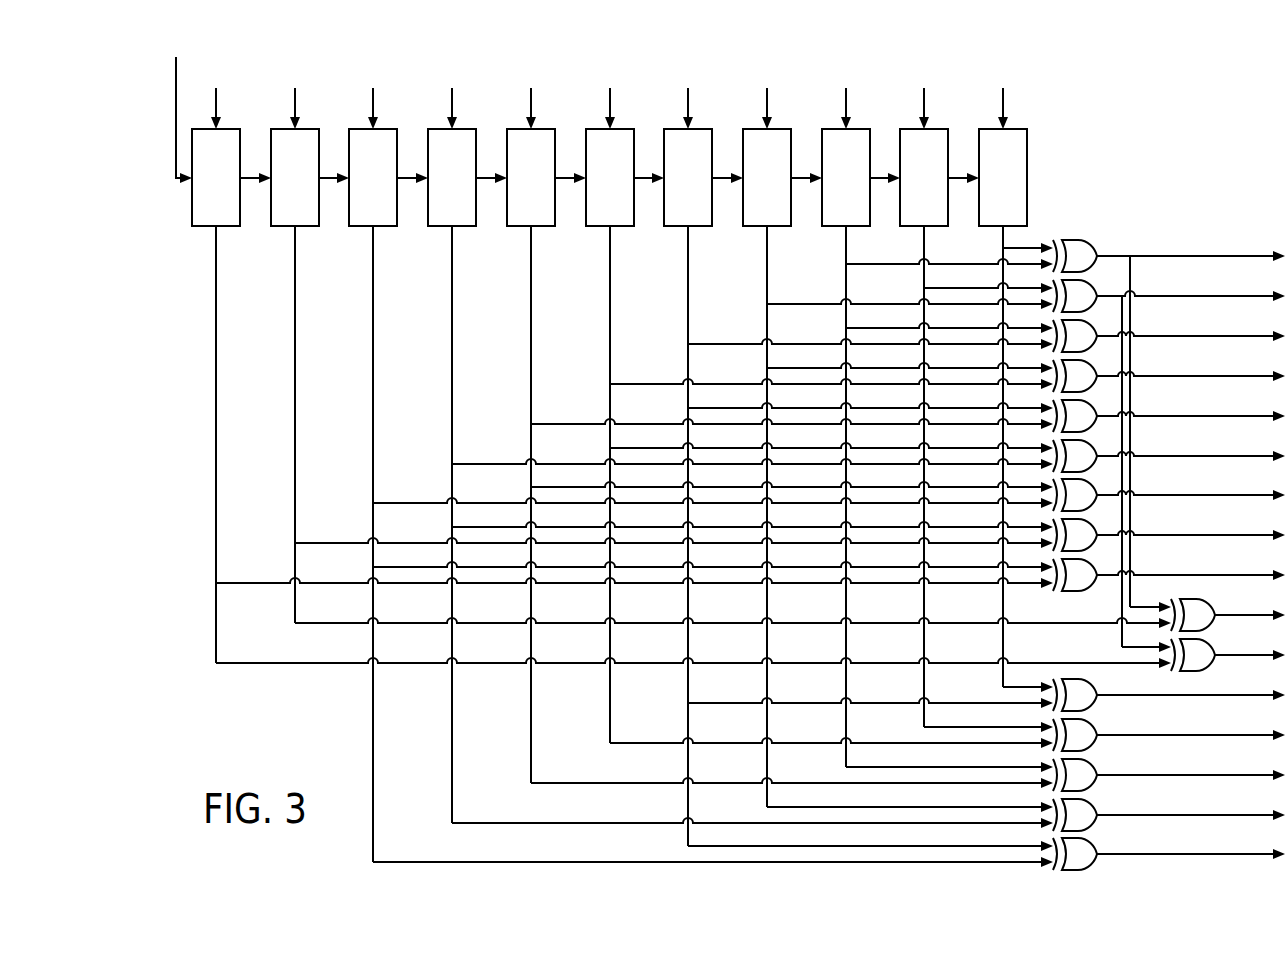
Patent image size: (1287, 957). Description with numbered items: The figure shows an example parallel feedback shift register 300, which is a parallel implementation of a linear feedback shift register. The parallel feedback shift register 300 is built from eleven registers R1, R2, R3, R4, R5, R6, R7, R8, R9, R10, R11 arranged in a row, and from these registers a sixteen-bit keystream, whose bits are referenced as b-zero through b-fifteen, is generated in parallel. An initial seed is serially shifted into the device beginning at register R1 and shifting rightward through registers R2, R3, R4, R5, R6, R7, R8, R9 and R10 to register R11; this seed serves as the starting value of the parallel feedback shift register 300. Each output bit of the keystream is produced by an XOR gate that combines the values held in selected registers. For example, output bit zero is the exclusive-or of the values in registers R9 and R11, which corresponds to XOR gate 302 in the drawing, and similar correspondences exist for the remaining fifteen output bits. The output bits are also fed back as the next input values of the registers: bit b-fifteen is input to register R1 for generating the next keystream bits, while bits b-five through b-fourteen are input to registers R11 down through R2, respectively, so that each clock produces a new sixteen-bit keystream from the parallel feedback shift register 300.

The parallel feedback shift register 300 is at (679, 35).
The XOR gate 302 is at (1075, 240).
The register R1 is at (216, 177).
The register R2 is at (295, 177).
The register R3 is at (373, 177).
The register R4 is at (452, 177).
The register R5 is at (531, 177).
The register R6 is at (610, 177).
The register R7 is at (688, 177).
The register R8 is at (767, 177).
The register R9 is at (846, 177).
The register R10 is at (924, 177).
The register R11 is at (1003, 177).